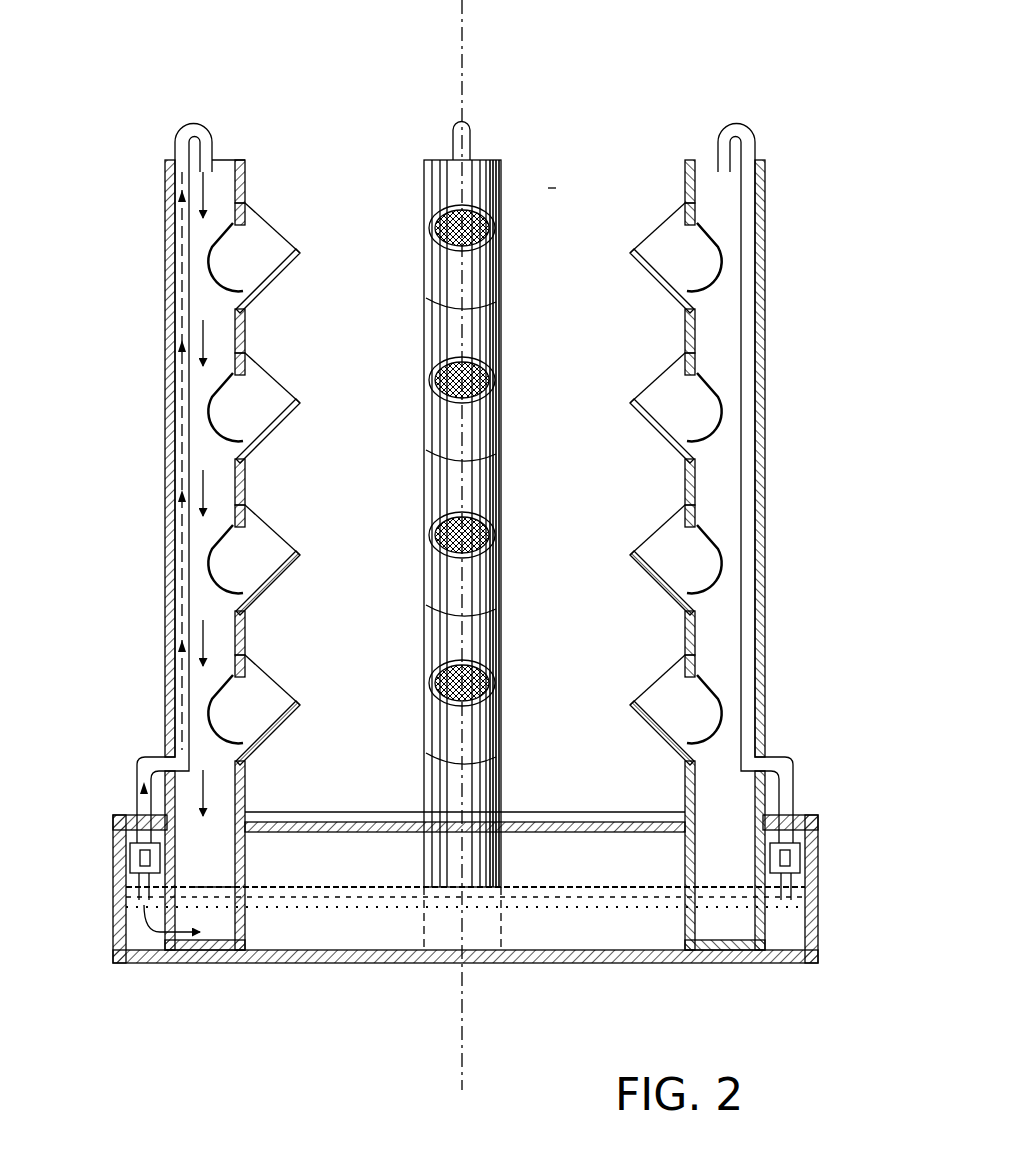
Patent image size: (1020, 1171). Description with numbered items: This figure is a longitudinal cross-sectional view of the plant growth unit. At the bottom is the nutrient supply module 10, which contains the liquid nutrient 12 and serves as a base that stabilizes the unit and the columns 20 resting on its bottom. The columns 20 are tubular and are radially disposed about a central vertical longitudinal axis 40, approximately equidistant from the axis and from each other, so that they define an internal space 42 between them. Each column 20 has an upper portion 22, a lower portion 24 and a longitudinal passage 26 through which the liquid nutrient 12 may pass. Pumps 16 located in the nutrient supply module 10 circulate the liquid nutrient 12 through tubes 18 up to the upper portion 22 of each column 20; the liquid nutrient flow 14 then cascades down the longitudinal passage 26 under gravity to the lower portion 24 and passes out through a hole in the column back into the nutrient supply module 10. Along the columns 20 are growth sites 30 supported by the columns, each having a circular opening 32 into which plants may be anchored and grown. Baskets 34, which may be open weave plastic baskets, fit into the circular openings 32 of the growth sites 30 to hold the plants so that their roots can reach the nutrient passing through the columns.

The nutrient supply module 10 is at (554, 966).
The liquid nutrient 12 is at (548, 884).
The liquid nutrient flow 14 is at (178, 550).
The pump 16 is at (128, 856).
The tube 18 is at (186, 122).
The column 20 is at (163, 437).
The upper portion 22 is at (165, 185).
The lower portion 24 is at (250, 800).
The longitudinal passage 26 is at (222, 160).
The growth site 30 is at (262, 580).
The circular opening 32 is at (444, 235).
The basket 34 is at (665, 240).
The central vertical longitudinal axis 40 is at (463, 48).
The internal space 42 is at (553, 186).